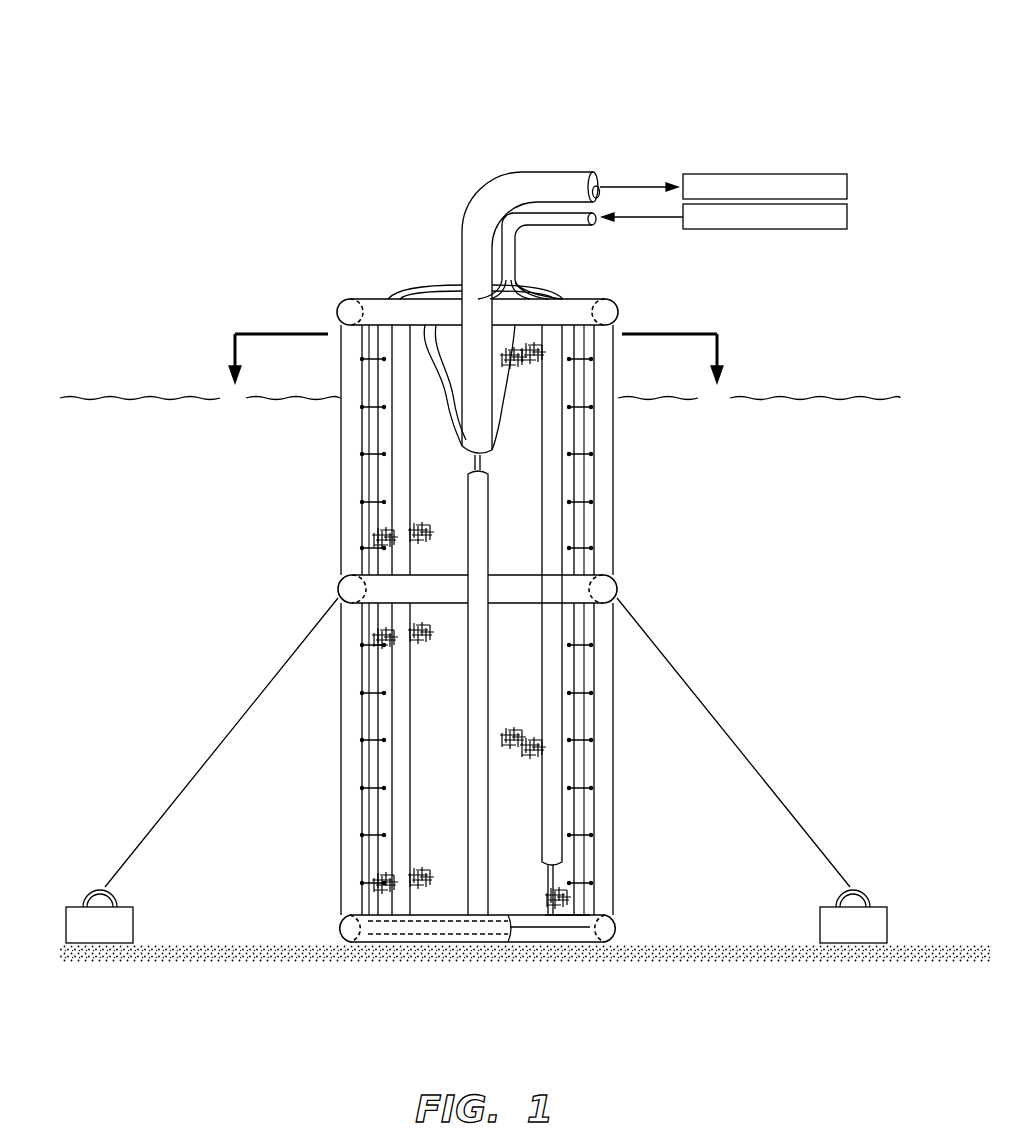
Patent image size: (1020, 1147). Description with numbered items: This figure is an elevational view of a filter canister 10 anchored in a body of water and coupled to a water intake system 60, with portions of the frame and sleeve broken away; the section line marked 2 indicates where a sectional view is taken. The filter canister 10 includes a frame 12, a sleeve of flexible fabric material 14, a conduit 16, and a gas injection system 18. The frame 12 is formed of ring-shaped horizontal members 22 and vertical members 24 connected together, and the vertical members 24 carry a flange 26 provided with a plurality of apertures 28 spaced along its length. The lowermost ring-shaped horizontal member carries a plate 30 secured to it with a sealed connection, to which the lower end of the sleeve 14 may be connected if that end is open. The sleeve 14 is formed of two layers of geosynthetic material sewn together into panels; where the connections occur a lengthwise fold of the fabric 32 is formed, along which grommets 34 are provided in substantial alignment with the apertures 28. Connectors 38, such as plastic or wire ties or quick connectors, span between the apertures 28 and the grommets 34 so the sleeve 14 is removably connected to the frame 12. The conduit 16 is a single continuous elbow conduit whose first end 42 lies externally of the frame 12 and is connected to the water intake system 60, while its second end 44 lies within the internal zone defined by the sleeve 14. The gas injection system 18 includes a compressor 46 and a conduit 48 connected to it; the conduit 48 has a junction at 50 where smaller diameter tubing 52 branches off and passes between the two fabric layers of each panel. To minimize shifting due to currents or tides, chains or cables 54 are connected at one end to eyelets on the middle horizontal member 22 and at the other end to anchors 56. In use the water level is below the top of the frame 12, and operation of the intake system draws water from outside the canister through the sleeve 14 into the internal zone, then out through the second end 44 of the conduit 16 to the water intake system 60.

The section line 2 is at (475, 375).
The filter canister 10 is at (270, 68).
The frame 12 is at (641, 486).
The sleeve of flexible fabric material 14 is at (430, 845).
The conduit 16 is at (479, 188).
The gas injection system 18 is at (845, 260).
The ring-shaped horizontal members 22 is at (607, 300).
The vertical members 24 is at (342, 486).
The flange 26 is at (362, 425).
The apertures 28 is at (590, 408).
The plate 30 is at (530, 932).
The lengthwise fold of the fabric 32 is at (382, 802).
The grommets 34 is at (382, 547).
The connectors 38 is at (592, 362).
The first end 42 is at (586, 172).
The second end 44 is at (478, 445).
The compressor 46 is at (691, 228).
The conduit 48 is at (597, 226).
The junction 50 is at (531, 275).
The tubing 52 is at (428, 290).
The chains or cables 54 is at (188, 778).
The anchors 56 is at (131, 913).
The water intake system 60 is at (691, 180).